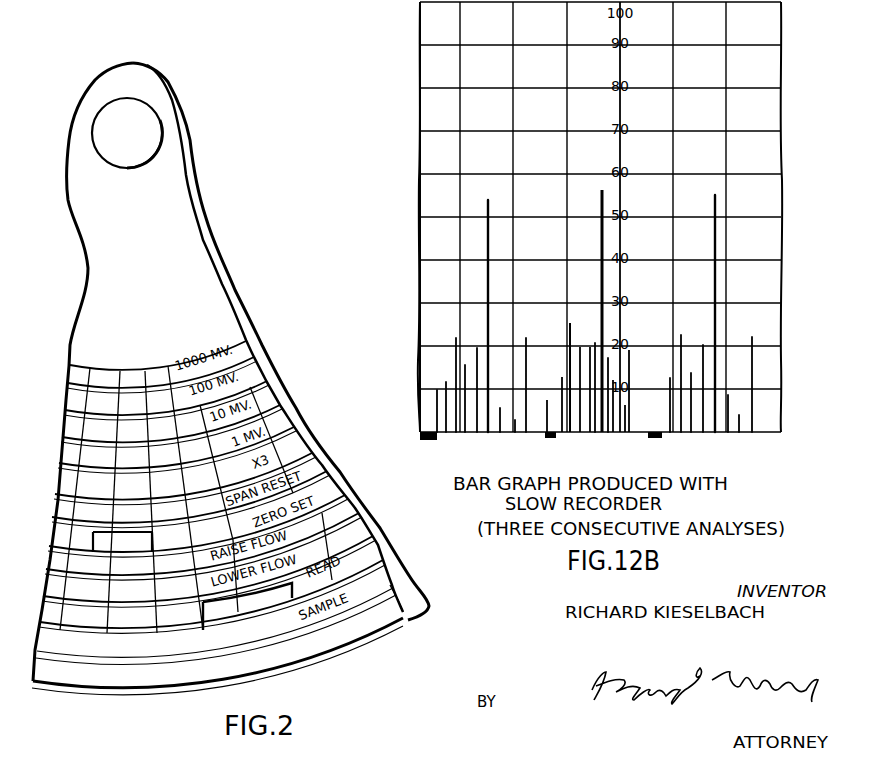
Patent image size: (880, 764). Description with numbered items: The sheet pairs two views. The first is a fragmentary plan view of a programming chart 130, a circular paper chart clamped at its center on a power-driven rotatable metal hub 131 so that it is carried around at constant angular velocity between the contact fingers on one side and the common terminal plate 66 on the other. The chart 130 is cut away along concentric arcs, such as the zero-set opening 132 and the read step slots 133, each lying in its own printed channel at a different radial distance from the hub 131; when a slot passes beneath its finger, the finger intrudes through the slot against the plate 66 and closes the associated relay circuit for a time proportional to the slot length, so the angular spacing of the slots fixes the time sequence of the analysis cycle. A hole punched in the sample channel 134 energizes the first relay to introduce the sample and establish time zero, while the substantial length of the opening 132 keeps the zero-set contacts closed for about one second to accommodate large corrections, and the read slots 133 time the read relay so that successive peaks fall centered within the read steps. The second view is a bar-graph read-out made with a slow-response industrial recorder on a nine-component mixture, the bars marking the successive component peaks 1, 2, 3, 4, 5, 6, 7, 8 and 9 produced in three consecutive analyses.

In FIG. 2, the programming chart 130 is at (190, 252).
In FIG. 2, the rotatable metal hub 131 is at (143, 135).
In FIG. 2, the plate 66 is at (280, 376).
In FIG. 2, the zero set opening 132 is at (110, 538).
In FIG. 2, the read step slots 133 is at (262, 604).
In FIG. 2, the sample channel 134 is at (410, 577).
In FIG. 12B, the component peak 1 is at (547, 400).
In FIG. 12B, the component peak 2 is at (562, 377).
In FIG. 12B, the component peak 3 is at (570, 323).
In FIG. 12B, the component peak 4 is at (580, 347).
In FIG. 12B, the component peak 5 is at (590, 347).
In FIG. 12B, the component peak 6 is at (602, 200).
In FIG. 12B, the component peak 7 is at (613, 395).
In FIG. 12B, the component peak 8 is at (625, 415).
In FIG. 12B, the component peak 9 is at (629, 355).